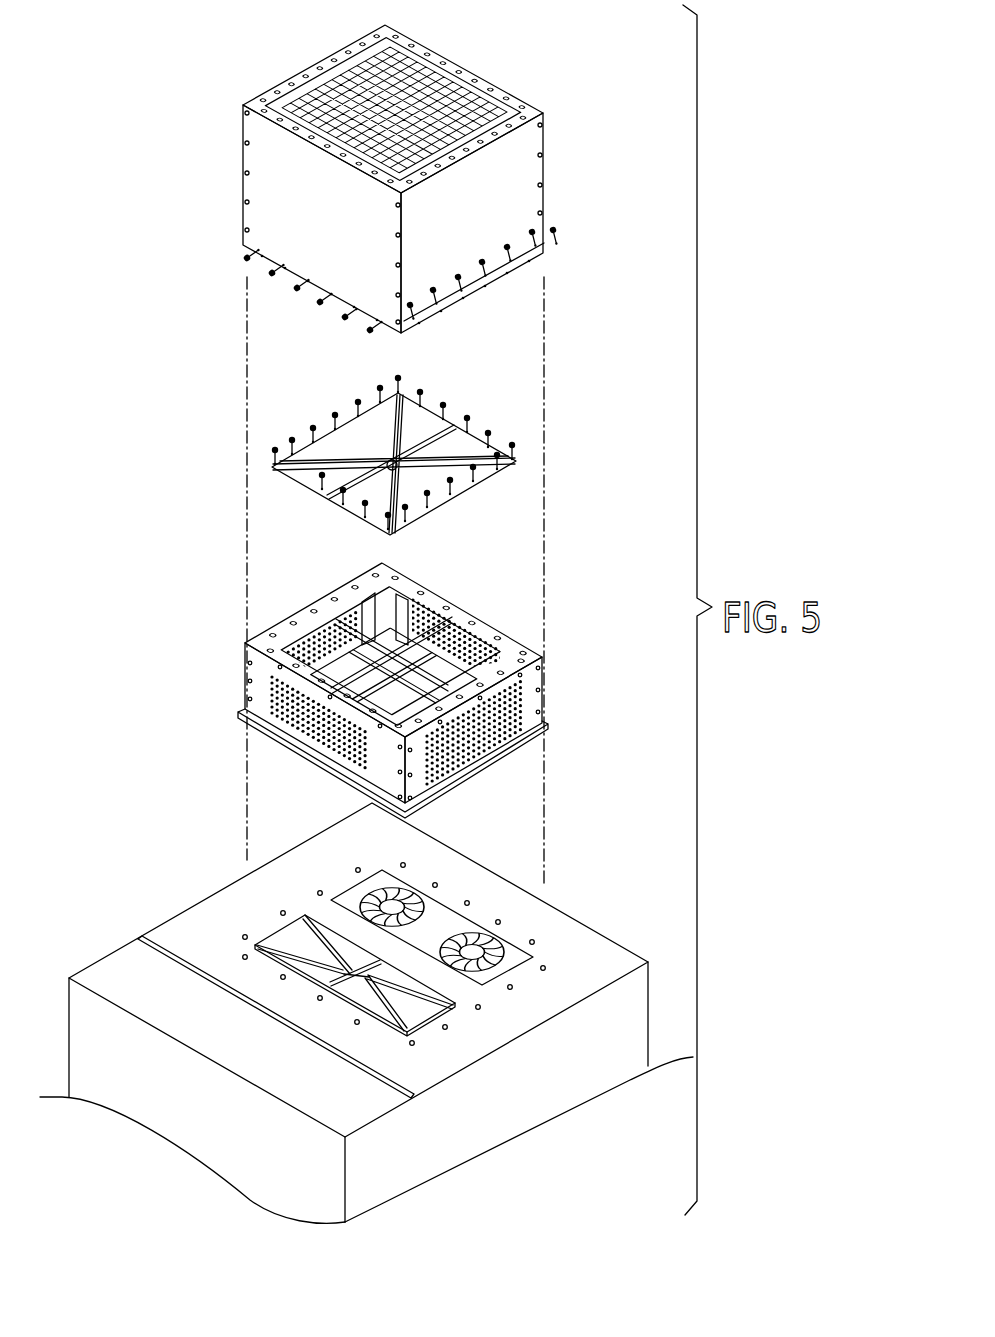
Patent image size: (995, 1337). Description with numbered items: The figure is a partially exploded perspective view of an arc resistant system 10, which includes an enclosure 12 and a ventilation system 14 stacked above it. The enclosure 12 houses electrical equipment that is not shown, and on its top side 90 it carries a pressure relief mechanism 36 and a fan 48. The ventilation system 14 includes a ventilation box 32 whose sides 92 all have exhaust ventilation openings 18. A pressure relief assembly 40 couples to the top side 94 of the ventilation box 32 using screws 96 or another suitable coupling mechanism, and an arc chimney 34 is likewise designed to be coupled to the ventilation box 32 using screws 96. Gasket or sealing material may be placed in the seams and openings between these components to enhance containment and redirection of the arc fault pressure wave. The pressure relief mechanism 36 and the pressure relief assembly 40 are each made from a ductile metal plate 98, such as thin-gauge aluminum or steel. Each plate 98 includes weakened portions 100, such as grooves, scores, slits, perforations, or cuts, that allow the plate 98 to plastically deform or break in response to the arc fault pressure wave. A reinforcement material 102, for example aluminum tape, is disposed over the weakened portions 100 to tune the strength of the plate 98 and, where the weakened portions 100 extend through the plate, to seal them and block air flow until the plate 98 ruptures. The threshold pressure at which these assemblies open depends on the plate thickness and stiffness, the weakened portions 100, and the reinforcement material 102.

The arc resistant system 10 is at (551, 38).
The enclosure 12 is at (649, 1015).
The ventilation system 14 is at (629, 42).
The exhaust ventilation openings 18 is at (309, 760).
The ventilation box 32 is at (568, 360).
The arc chimney 34 is at (236, 160).
The pressure relief mechanism 36 is at (452, 1018).
The pressure relief assembly 40 is at (346, 391).
The fan 48 is at (498, 968).
The top side of the enclosure 90 is at (228, 905).
The sides of the ventilation box 92 is at (259, 692).
The top side of the ventilation box 94 is at (323, 614).
The screws 96 is at (368, 331).
The ductile metal plate 98 is at (333, 447).
The weakened portions 100 is at (453, 467).
The reinforcement material 102 is at (365, 492).